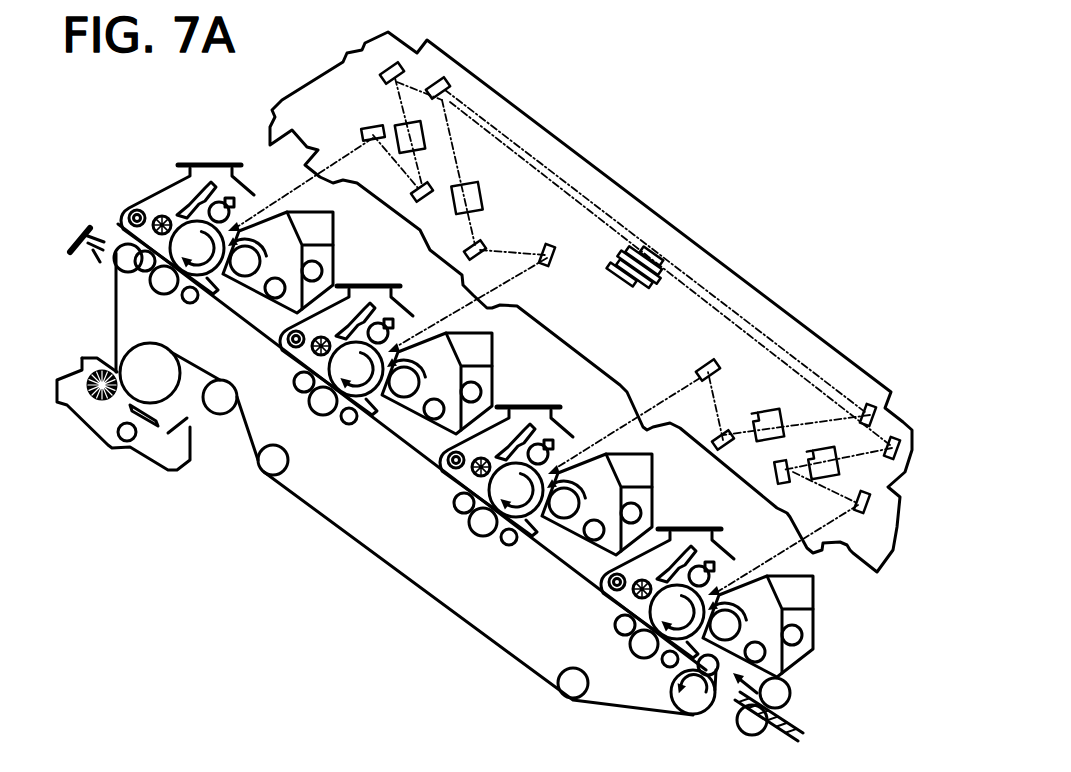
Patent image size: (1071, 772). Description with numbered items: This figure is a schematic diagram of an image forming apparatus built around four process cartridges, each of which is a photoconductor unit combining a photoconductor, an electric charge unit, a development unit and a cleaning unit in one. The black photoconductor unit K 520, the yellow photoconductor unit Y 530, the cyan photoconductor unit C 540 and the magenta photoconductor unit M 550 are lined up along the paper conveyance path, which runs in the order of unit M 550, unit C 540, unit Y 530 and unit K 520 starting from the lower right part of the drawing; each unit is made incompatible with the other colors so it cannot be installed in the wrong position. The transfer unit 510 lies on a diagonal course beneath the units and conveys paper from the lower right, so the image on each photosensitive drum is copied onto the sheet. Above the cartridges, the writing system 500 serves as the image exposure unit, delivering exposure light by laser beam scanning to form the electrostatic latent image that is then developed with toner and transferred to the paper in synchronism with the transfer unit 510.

The writing system 500 is at (720, 303).
The transfer unit 510 is at (370, 555).
The black photoconductor unit K 520 is at (200, 298).
The yellow photoconductor unit Y 530 is at (357, 418).
The cyan photoconductor unit C 540 is at (503, 537).
The magenta photoconductor unit M 550 is at (667, 640).